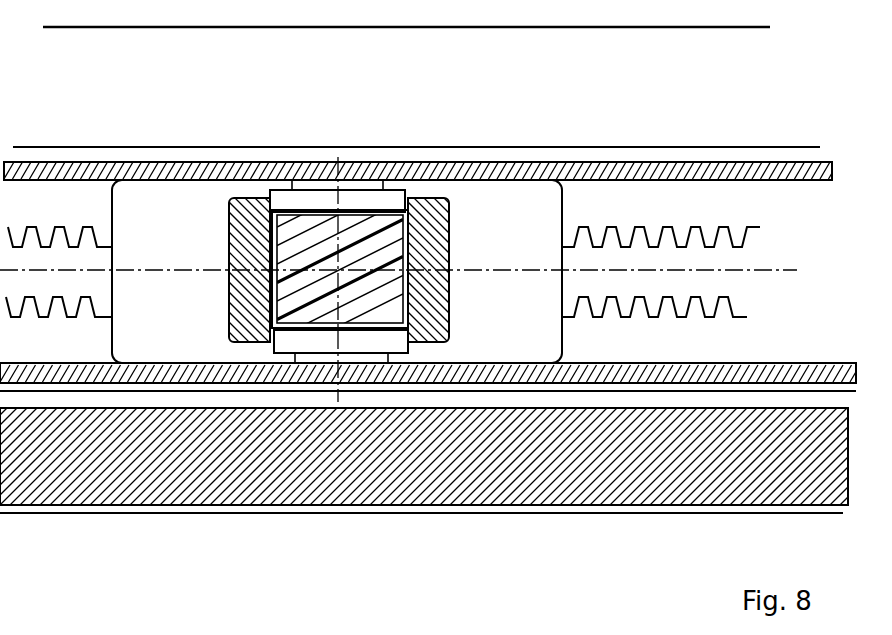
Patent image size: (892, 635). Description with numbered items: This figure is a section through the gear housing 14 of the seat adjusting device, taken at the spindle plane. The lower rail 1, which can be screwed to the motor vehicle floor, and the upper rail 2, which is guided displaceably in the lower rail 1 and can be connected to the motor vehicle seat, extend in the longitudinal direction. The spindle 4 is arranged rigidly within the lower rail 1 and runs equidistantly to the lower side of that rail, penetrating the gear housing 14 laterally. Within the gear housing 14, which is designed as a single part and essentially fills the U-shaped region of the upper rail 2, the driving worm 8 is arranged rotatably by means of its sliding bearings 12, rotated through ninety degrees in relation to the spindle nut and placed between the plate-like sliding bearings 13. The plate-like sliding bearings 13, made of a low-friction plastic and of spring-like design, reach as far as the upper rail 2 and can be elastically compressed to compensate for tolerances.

The lower rail 1 is at (600, 438).
The upper rail 2 is at (640, 170).
The spindle 4 is at (733, 258).
The driving worm 8 is at (358, 228).
The sliding bearings 12 is at (305, 202).
The sliding bearings 13 is at (245, 213).
The gear housing 14 is at (520, 263).